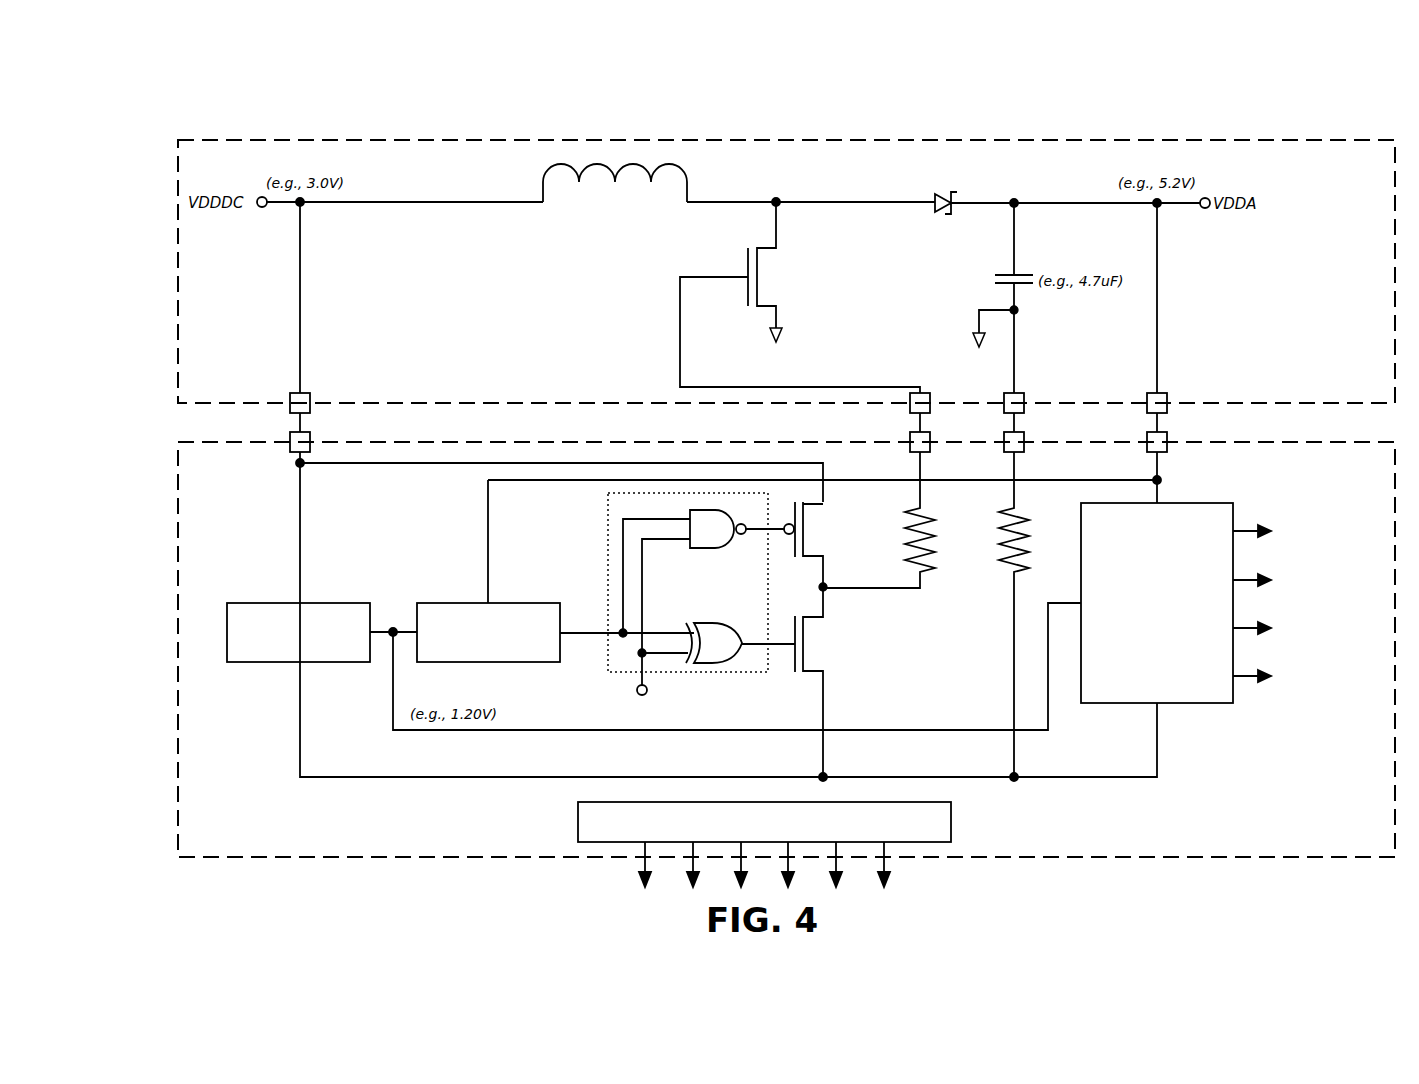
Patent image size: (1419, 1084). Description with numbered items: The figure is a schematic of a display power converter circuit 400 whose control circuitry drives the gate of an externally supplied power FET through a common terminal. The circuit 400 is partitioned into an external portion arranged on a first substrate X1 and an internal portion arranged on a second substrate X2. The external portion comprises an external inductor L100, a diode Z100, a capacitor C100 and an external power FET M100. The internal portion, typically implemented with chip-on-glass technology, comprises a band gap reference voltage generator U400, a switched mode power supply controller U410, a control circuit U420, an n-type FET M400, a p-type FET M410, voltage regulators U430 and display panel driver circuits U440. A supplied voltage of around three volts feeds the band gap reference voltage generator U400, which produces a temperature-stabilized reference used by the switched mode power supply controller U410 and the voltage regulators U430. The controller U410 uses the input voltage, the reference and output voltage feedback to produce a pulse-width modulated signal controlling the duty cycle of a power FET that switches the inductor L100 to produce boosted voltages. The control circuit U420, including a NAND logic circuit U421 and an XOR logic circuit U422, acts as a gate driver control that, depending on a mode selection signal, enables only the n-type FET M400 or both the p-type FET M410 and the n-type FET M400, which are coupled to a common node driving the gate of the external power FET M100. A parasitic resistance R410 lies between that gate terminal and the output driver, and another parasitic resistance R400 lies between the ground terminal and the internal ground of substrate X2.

The circuit 400 is at (1335, 117).
The first substrate X1 is at (247, 402).
The second substrate X2 is at (247, 443).
The external inductor L100 is at (614, 200).
The external power FET M100 is at (760, 284).
The diode Z100 is at (943, 194).
The capacitor C100 is at (1000, 277).
The band gap reference voltage generator U400 is at (281, 603).
The switched mode power supply controller U410 is at (471, 603).
The control circuit U420 is at (654, 607).
The NAND logic circuit U421 is at (714, 548).
The XOR logic circuit U422 is at (716, 623).
The p-type FET M410 is at (804, 530).
The n-type FET M400 is at (804, 645).
The parasitic resistance R410 is at (928, 508).
The parasitic resistance R400 is at (1008, 572).
The voltage regulators U430 is at (1174, 503).
The display panel driver circuits U440 is at (577, 820).